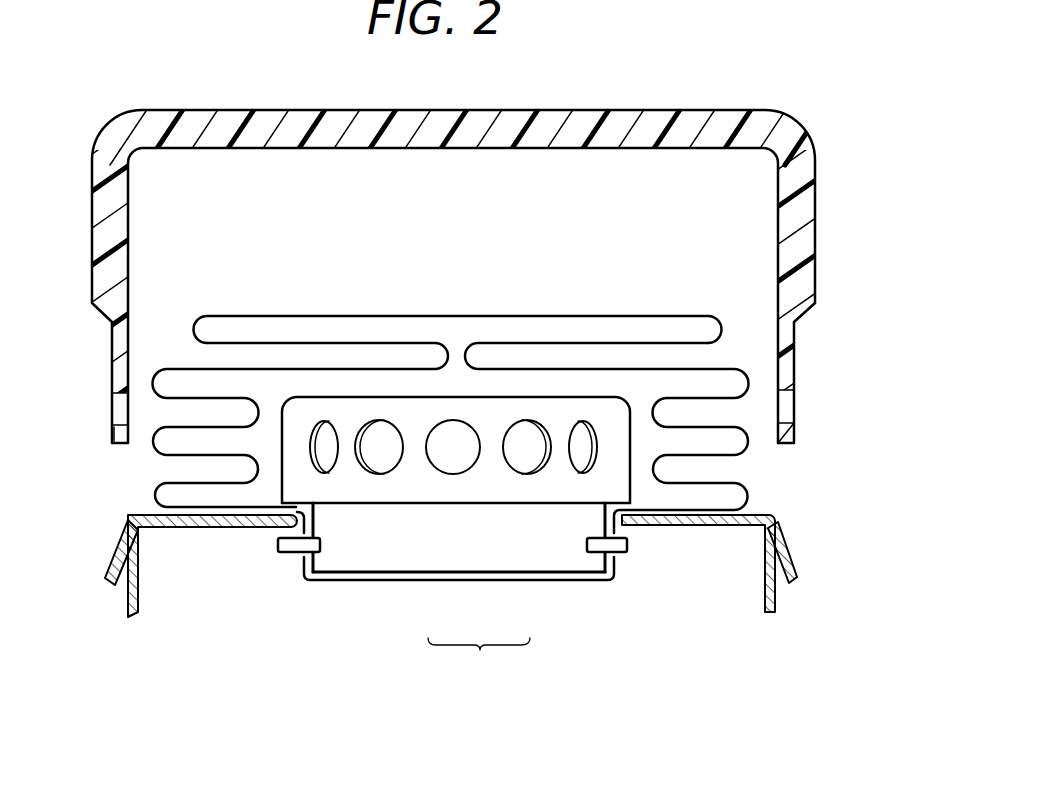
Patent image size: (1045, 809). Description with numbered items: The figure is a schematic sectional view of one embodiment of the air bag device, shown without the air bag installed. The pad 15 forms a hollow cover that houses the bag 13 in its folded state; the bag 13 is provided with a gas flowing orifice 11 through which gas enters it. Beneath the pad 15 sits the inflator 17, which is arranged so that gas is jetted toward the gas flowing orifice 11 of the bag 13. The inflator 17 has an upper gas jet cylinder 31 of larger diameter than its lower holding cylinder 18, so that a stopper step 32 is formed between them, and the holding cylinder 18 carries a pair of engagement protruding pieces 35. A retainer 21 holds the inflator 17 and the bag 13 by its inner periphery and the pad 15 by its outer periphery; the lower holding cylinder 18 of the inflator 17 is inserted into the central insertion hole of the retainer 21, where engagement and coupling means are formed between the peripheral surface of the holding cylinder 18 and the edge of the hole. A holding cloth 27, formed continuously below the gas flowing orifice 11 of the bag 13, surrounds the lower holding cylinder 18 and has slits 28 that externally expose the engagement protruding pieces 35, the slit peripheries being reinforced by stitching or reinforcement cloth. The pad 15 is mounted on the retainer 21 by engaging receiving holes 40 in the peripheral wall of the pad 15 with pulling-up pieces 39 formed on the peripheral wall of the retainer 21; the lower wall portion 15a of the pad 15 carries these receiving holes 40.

The gas flowing orifice 11 is at (305, 518).
The bag 13 is at (375, 318).
The pad 15 is at (663, 118).
The cover lower wall 15a is at (778, 348).
The inflator 17 is at (479, 660).
The lower holding cylinder 18 is at (454, 573).
The retainer 21 is at (185, 528).
The holding cloth 27 is at (605, 582).
The slits 28 is at (617, 532).
The upper gas jet cylinder 31 is at (550, 483).
The stopper step 32 is at (622, 505).
The engagement protruding pieces 35 is at (292, 553).
The pulling-up pieces 39 is at (787, 558).
The receiving holes 40 is at (782, 410).